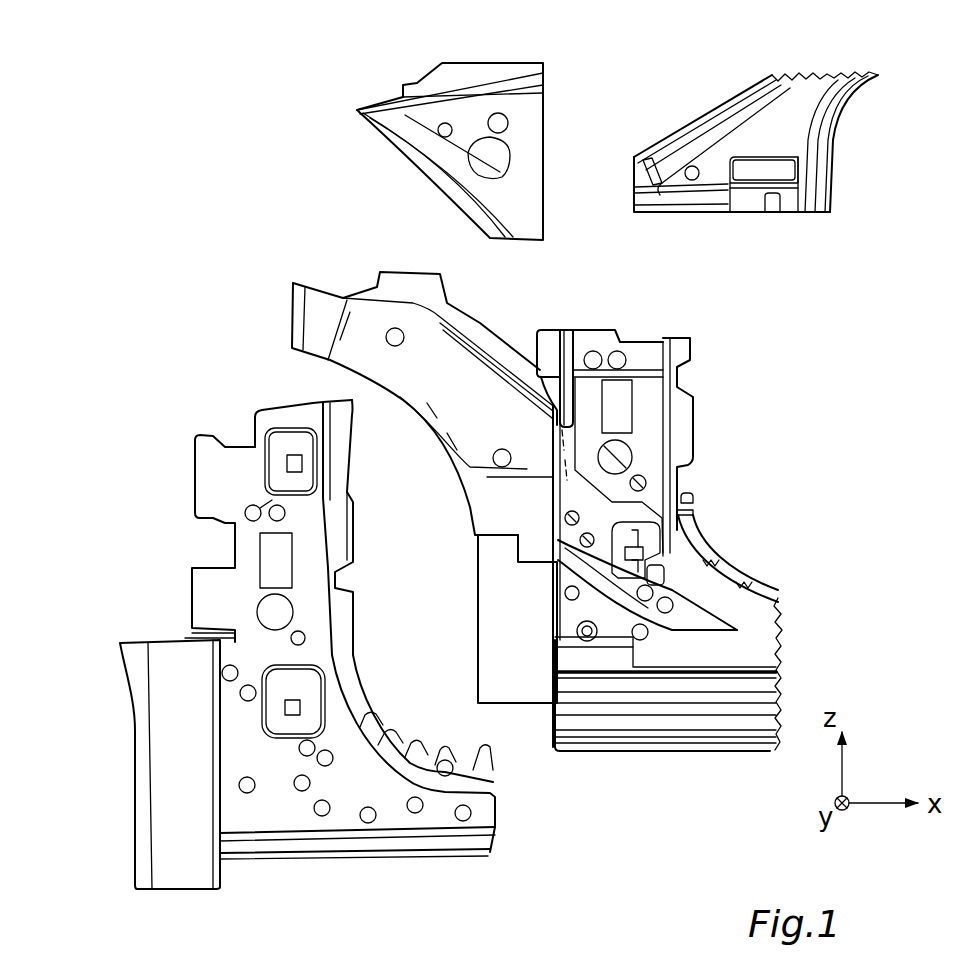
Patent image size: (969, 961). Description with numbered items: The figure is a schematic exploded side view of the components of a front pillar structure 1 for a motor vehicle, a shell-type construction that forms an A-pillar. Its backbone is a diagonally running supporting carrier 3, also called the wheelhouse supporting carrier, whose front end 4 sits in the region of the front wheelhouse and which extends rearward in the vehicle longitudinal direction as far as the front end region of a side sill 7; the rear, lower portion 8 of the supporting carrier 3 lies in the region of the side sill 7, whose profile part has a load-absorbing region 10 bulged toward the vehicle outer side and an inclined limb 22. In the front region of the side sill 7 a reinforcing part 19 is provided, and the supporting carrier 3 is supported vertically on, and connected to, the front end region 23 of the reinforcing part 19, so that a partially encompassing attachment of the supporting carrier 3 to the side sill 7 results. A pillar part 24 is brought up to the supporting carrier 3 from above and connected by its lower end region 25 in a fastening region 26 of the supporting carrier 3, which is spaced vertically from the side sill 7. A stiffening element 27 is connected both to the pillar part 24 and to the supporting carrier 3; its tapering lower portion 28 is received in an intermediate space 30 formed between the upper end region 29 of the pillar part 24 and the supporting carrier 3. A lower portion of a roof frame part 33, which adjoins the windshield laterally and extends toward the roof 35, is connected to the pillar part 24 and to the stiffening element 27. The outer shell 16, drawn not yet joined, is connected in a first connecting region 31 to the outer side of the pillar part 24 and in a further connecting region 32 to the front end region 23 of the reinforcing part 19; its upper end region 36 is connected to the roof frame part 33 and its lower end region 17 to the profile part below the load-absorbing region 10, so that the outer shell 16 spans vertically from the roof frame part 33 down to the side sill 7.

The front pillar structure 1 is at (285, 180).
The supporting carrier 3 is at (393, 394).
The front end of the supporting carrier 4 is at (315, 320).
The side sill 7 is at (721, 715).
The rear, lower portion of the supporting carrier 8 is at (763, 660).
The load-absorbing region 10 is at (782, 670).
The outer shell 16 is at (287, 637).
The lower end region of the outer shell 17 is at (430, 838).
The reinforcing part 19 is at (598, 658).
The limb of the profile part 22 is at (703, 705).
The front end region of the reinforcing part 23 is at (495, 618).
The pillar part 24 is at (665, 538).
The lower end region of the pillar part 25 is at (657, 492).
The fastening region 26 is at (688, 555).
The stiffening element 27 is at (457, 129).
The lower portion of the stiffening element 28 is at (523, 221).
The upper end region of the pillar part 29 is at (566, 343).
The intermediate space 30 is at (532, 333).
The first connecting region 31 is at (307, 538).
The further connecting region 32 is at (160, 745).
The roof frame part 33 is at (750, 128).
The roof 35 is at (564, 956).
The upper end region of the outer shell 36 is at (290, 418).